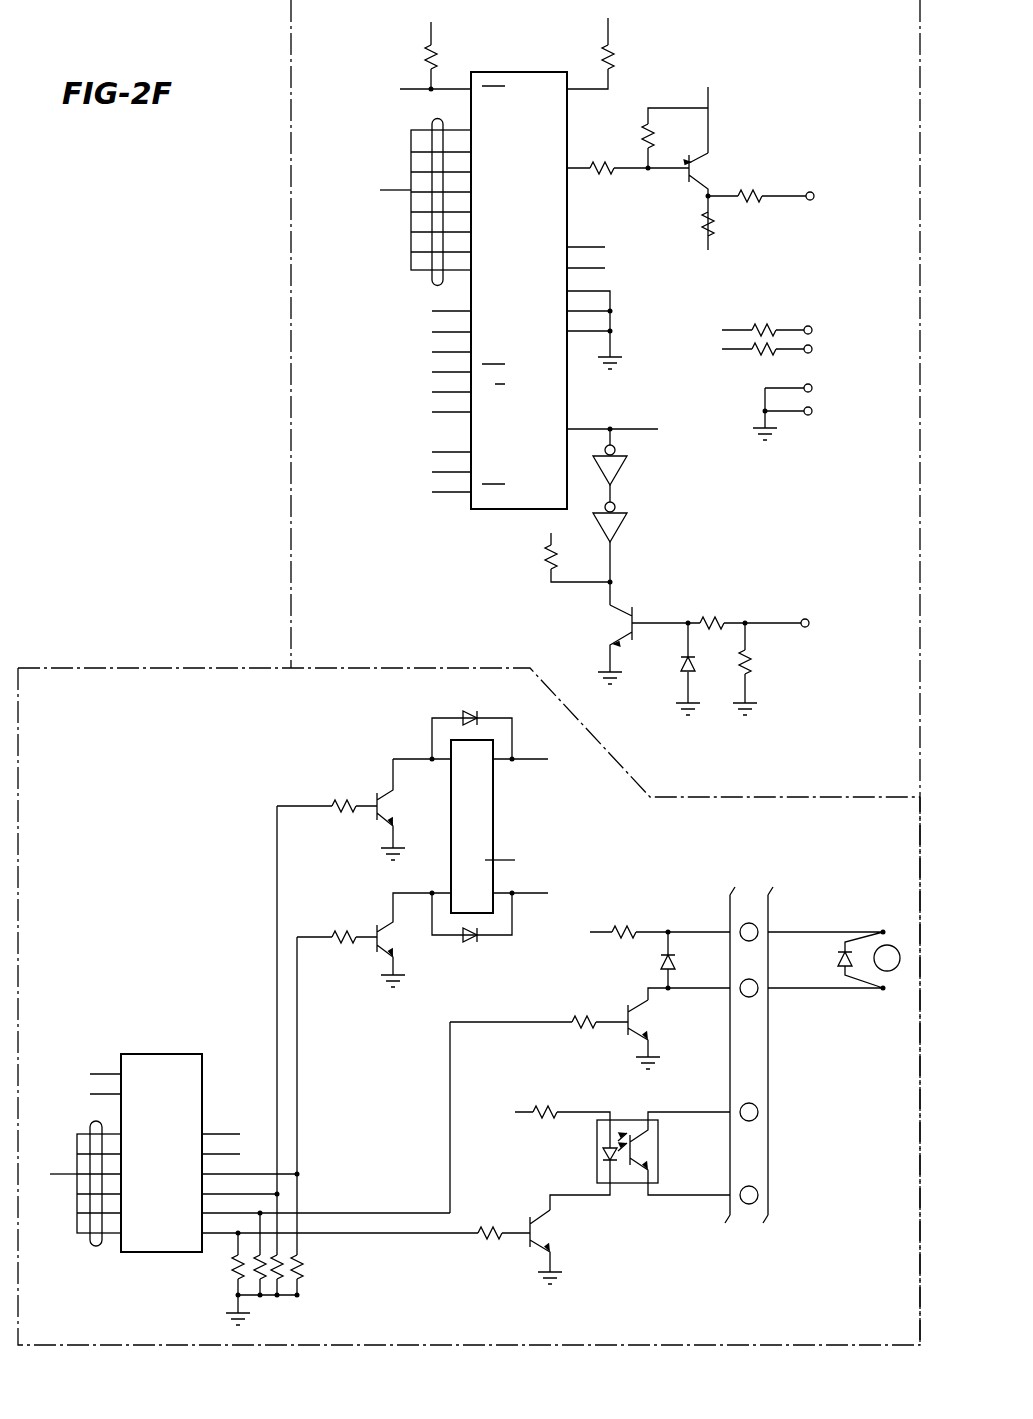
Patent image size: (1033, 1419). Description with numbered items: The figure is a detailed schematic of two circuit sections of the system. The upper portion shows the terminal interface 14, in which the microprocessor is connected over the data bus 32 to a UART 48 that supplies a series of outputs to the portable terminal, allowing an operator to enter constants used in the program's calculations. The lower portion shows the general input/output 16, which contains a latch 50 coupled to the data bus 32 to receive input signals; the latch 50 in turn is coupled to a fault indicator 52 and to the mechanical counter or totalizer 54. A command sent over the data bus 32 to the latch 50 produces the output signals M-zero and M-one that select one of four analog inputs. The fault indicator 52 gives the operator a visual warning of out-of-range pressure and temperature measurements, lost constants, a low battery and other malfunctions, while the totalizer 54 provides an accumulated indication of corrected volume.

The terminal interface 14 is at (603, 357).
The general input/output 16 is at (415, 1013).
The data bus 32 is at (432, 117).
The UART 48 is at (568, 392).
The latch 50 is at (202, 1082).
The fault indicator 52 is at (493, 817).
The totalizer 54 is at (897, 947).